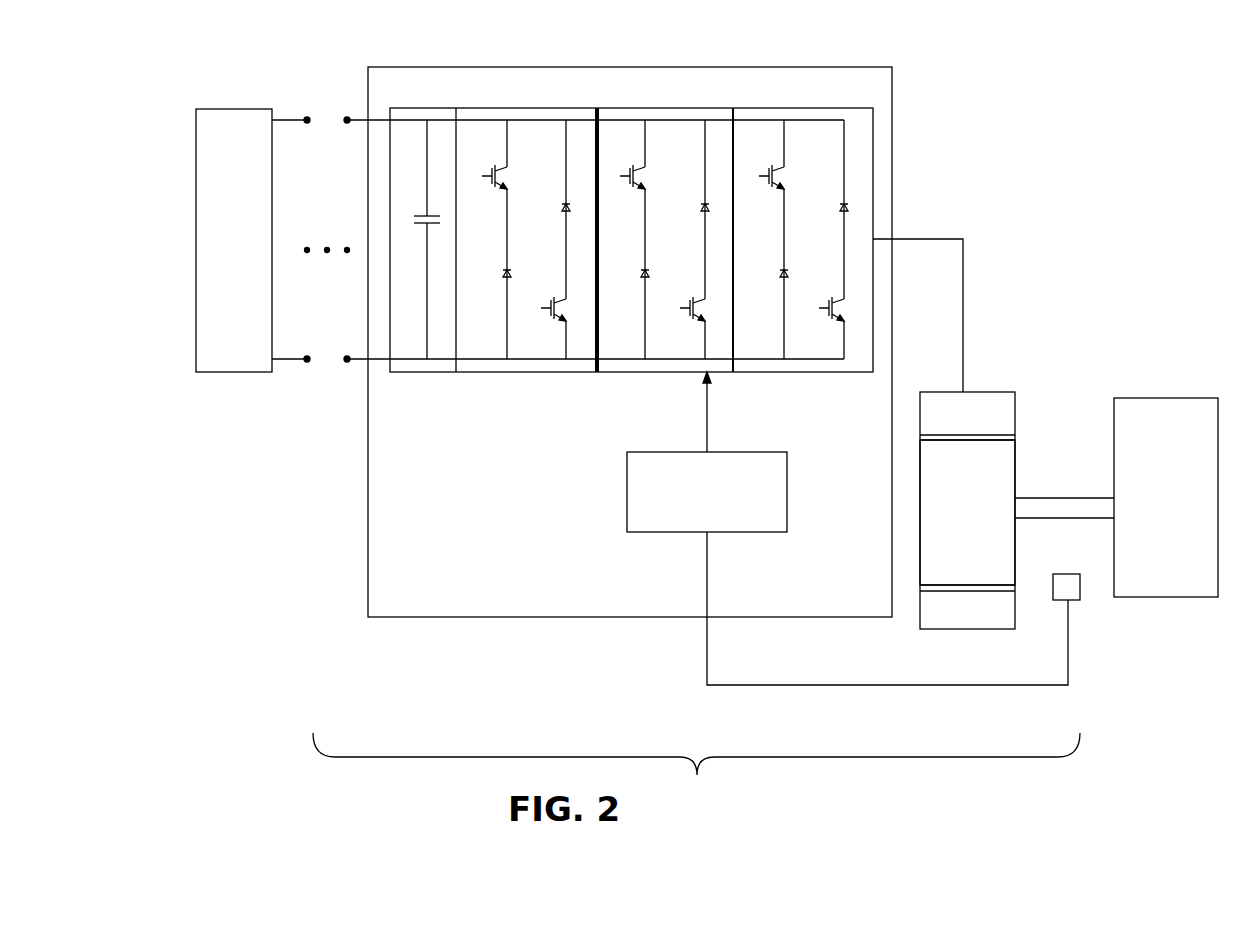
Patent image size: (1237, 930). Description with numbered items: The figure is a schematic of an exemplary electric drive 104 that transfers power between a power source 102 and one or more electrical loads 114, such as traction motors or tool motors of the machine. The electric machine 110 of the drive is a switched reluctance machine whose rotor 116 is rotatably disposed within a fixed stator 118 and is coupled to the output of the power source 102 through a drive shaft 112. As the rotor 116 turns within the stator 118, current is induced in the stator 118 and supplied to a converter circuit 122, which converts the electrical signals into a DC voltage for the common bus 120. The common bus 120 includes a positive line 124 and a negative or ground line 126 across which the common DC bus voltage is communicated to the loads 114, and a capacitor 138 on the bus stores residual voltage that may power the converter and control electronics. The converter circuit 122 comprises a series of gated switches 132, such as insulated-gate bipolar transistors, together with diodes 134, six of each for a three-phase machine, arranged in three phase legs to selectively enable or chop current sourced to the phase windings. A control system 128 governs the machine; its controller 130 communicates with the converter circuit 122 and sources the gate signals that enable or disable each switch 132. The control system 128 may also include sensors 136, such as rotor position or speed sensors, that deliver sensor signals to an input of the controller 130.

The power source 102 is at (1158, 412).
The electric drive 104 is at (696, 767).
The electric machine 110 is at (1008, 350).
The drive shaft 112 is at (1042, 505).
The electrical load 114 is at (222, 350).
The rotor 116 is at (958, 525).
The stator 118 is at (935, 422).
The common bus 120 is at (347, 118).
The converter circuit 122 is at (726, 108).
The positive line 124 is at (358, 124).
The negative line 126 is at (352, 356).
The control system 128 is at (414, 618).
The controller 130 is at (643, 470).
The gated switch 132 is at (492, 168).
The diode 134 is at (561, 208).
The sensor 136 is at (1068, 588).
The capacitor 138 is at (426, 224).